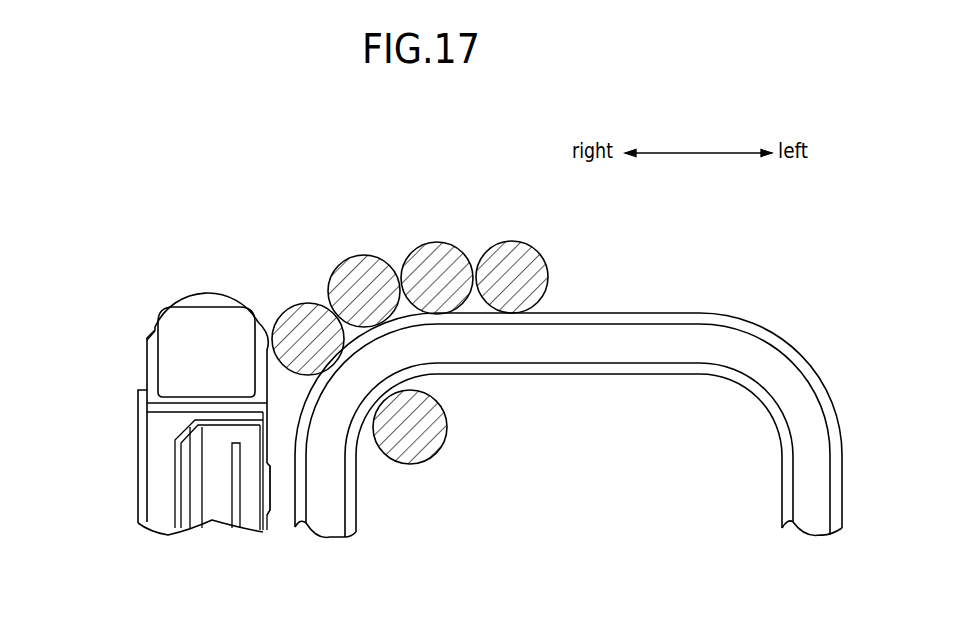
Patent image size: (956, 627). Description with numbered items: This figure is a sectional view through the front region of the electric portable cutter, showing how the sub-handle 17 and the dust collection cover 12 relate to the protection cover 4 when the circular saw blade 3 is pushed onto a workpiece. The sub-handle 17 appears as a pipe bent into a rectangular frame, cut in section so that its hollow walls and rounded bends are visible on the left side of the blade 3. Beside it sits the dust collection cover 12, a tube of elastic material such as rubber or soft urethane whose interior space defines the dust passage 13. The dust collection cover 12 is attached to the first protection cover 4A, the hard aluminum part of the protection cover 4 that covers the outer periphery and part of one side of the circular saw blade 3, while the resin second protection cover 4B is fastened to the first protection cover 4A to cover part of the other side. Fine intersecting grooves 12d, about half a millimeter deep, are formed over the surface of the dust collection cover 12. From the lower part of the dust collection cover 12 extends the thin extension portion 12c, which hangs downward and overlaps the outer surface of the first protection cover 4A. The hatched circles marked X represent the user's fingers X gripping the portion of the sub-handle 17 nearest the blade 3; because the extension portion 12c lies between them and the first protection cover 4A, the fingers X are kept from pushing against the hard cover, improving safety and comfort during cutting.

The circular saw blade 3 is at (237, 498).
The protection cover 4 is at (190, 492).
The first protection cover 4A is at (268, 527).
The second protection cover 4B is at (138, 465).
The dust collection cover 12 is at (229, 387).
The extension portion 12c is at (270, 487).
The grooves 12d is at (148, 327).
The dust passage 13 is at (207, 327).
The sub-handle 17 is at (665, 302).
The fingers X is at (337, 265).